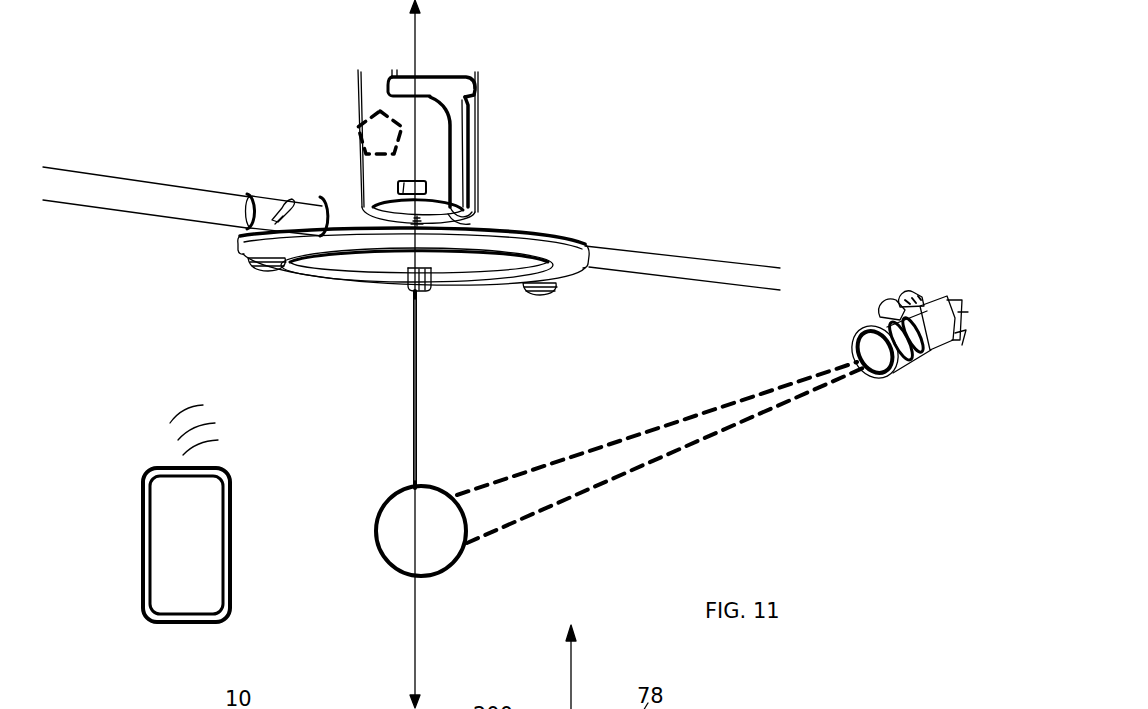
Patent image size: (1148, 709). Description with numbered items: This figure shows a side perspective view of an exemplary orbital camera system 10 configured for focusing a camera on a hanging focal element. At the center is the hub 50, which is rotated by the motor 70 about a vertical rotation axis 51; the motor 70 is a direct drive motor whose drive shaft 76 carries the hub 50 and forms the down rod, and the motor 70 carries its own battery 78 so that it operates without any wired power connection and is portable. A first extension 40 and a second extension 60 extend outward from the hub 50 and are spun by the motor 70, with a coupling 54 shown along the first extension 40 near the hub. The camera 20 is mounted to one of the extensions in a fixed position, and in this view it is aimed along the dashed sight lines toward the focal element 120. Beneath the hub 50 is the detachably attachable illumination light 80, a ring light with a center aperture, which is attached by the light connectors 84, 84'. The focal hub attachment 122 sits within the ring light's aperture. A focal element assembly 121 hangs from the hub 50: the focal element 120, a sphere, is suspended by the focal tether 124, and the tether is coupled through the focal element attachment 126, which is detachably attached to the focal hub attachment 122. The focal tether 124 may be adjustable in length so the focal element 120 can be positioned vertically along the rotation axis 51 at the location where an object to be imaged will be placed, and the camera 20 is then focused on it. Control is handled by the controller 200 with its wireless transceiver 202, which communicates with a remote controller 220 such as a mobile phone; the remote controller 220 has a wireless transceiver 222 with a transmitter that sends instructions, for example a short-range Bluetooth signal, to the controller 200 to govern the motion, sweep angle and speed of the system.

The orbital camera system 10 is at (278, 94).
The camera 20 is at (920, 287).
The first extension 40 is at (170, 207).
The hub 50 is at (452, 221).
The rotation axis 51 is at (413, 610).
The rod connector 54 is at (288, 213).
The second extension 60 is at (628, 255).
The motor 70 is at (463, 128).
The drive shaft 76 is at (473, 200).
The battery 78 is at (468, 88).
The illumination light 80 is at (297, 277).
The light connector 84 is at (224, 299).
The light connector 84' is at (581, 315).
The focal element 120 is at (400, 520).
The focal element assembly 121 is at (417, 435).
The focal hub attachment 122 is at (412, 292).
The focal tether 124 is at (413, 407).
The focal element attachment 126 is at (423, 283).
The controller 200 is at (387, 112).
The wireless transceiver 202 is at (403, 185).
The remote controller 220 is at (150, 470).
The wireless transceiver 222 is at (228, 478).